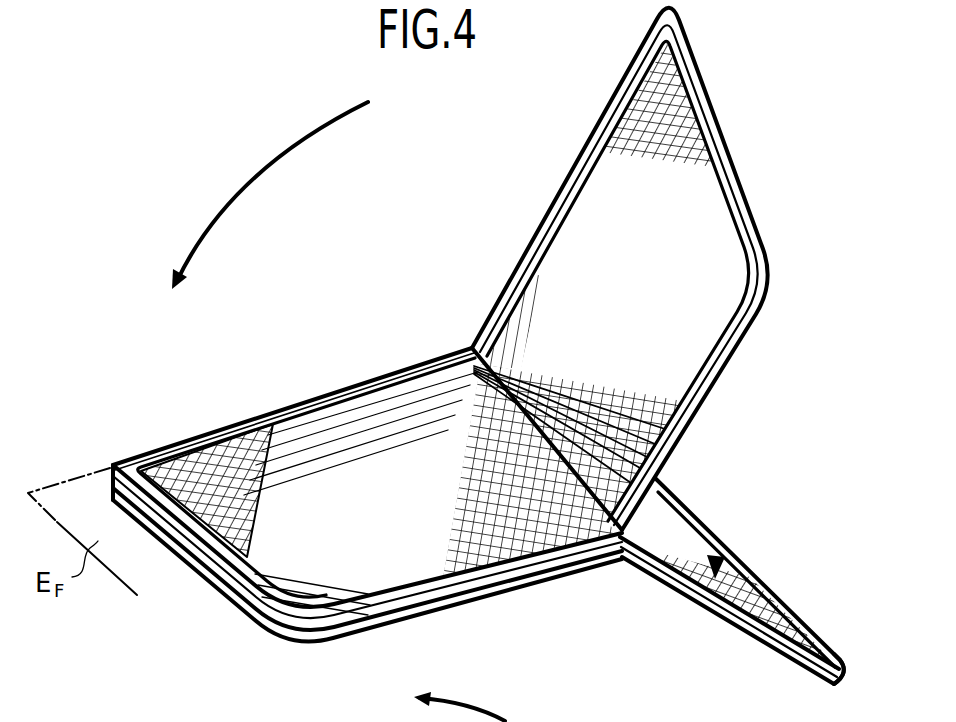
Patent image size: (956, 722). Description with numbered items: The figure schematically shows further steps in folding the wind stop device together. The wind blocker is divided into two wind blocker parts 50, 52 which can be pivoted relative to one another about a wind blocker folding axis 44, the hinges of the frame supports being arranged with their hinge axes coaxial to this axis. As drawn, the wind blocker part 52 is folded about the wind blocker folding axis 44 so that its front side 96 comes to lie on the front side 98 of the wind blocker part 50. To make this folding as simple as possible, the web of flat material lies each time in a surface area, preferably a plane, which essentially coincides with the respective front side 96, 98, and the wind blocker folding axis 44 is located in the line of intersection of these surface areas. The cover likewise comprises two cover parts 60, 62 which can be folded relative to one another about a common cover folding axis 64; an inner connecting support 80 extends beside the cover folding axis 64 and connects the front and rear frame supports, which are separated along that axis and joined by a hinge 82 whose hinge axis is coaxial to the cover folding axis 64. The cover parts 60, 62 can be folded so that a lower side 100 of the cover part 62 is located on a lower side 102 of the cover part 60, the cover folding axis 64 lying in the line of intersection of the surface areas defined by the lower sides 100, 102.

The wind blocker folding axis 44 is at (472, 346).
The wind blocker part 50 is at (327, 555).
The wind blocker part 52 is at (686, 327).
The cover part 60 is at (534, 592).
The cover part 62 is at (722, 550).
The cover folding axis 64 is at (623, 545).
The inner connecting support 80 is at (337, 640).
The hinge 82 is at (845, 665).
The front side 96 is at (596, 128).
The front side 98 is at (279, 417).
The lower side 100 is at (736, 628).
The lower side 102 is at (449, 620).